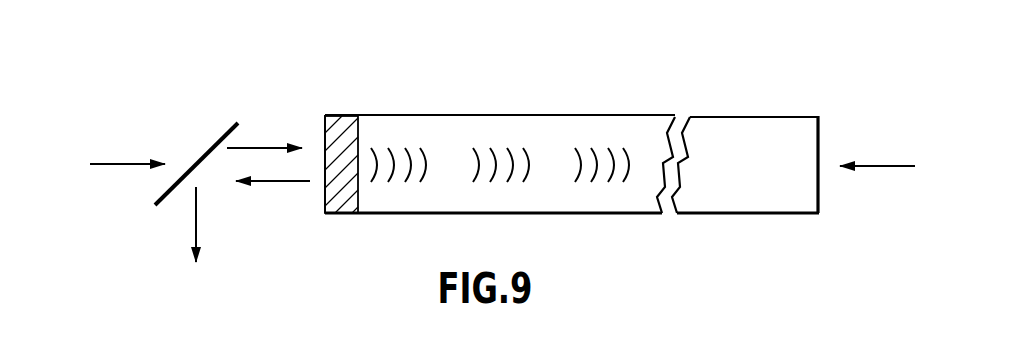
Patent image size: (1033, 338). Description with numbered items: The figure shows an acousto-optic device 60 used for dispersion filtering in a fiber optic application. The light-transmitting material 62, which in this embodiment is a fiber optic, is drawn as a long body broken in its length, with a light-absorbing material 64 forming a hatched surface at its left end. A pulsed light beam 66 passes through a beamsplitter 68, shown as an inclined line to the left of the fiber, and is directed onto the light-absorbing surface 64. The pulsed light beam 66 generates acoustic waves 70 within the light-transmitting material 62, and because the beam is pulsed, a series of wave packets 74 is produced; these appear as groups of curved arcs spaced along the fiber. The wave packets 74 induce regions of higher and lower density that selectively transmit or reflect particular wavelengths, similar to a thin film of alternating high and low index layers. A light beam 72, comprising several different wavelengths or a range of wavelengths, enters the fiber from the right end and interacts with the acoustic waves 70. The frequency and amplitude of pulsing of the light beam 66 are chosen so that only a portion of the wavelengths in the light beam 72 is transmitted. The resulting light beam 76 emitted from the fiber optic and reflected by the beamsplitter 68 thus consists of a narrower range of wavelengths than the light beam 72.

The acousto-optic device 60 is at (572, 132).
The light-transmitting material 62 is at (440, 115).
The light-absorbing material 64 is at (348, 115).
The pulsed light beam 66 is at (130, 162).
The beamsplitter 68 is at (208, 152).
The acoustic waves 70 is at (518, 145).
The light beam 72 is at (878, 165).
The wave packets 74 is at (500, 168).
The exiting beam 76 is at (280, 182).